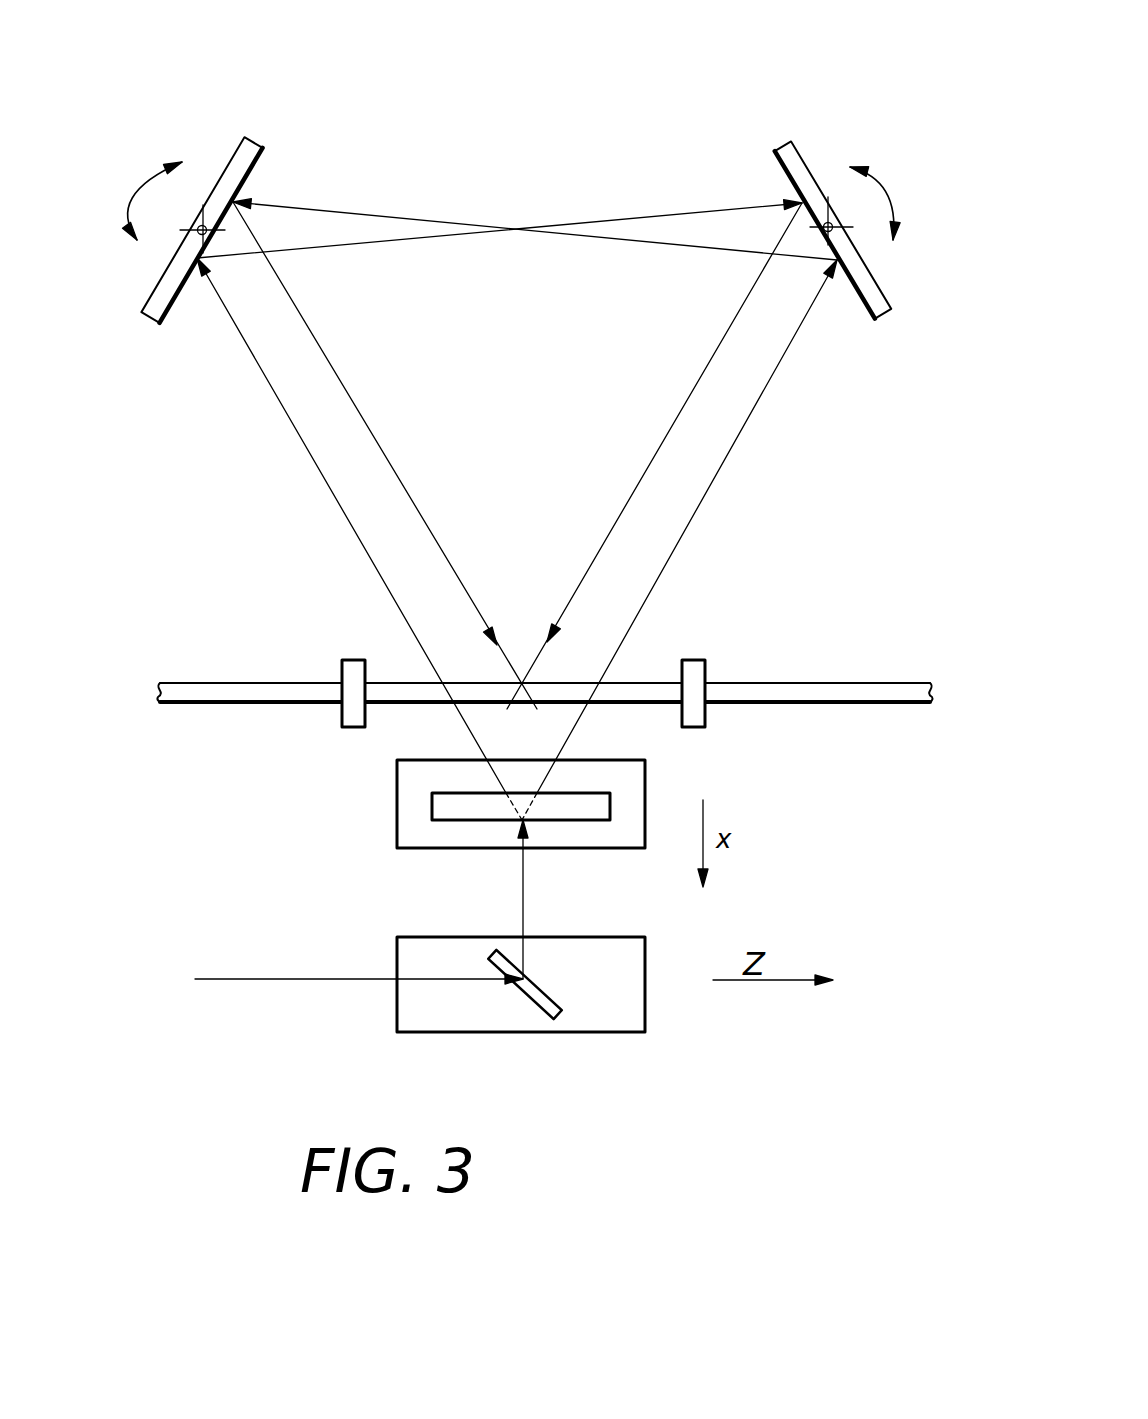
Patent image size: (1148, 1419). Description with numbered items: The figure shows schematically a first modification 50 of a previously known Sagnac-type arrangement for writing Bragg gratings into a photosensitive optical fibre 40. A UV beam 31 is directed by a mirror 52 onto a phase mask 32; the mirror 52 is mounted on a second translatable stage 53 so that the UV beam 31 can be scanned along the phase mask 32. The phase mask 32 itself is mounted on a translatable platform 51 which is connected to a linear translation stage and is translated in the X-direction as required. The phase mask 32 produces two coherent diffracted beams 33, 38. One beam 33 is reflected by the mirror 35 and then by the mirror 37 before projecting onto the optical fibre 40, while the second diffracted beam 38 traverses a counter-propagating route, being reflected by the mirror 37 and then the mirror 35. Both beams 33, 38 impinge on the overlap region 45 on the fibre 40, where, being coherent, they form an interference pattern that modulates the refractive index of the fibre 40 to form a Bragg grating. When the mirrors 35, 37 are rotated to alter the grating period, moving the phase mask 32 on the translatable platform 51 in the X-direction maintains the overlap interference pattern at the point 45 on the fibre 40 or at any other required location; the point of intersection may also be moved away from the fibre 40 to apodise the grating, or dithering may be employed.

The UV beam 31 is at (524, 918).
The phase mask 32 is at (610, 804).
The diffracted beam 33 is at (710, 487).
The mirror 35 is at (782, 140).
The mirror 37 is at (255, 140).
The second diffracted beam 38 is at (318, 464).
The optical fibre 40 is at (833, 692).
The overlap region 45 is at (523, 660).
The first modification 50 is at (702, 118).
The translatable platform 51 is at (397, 790).
The mirror 52 is at (523, 998).
The second translatable stage 53 is at (645, 1009).